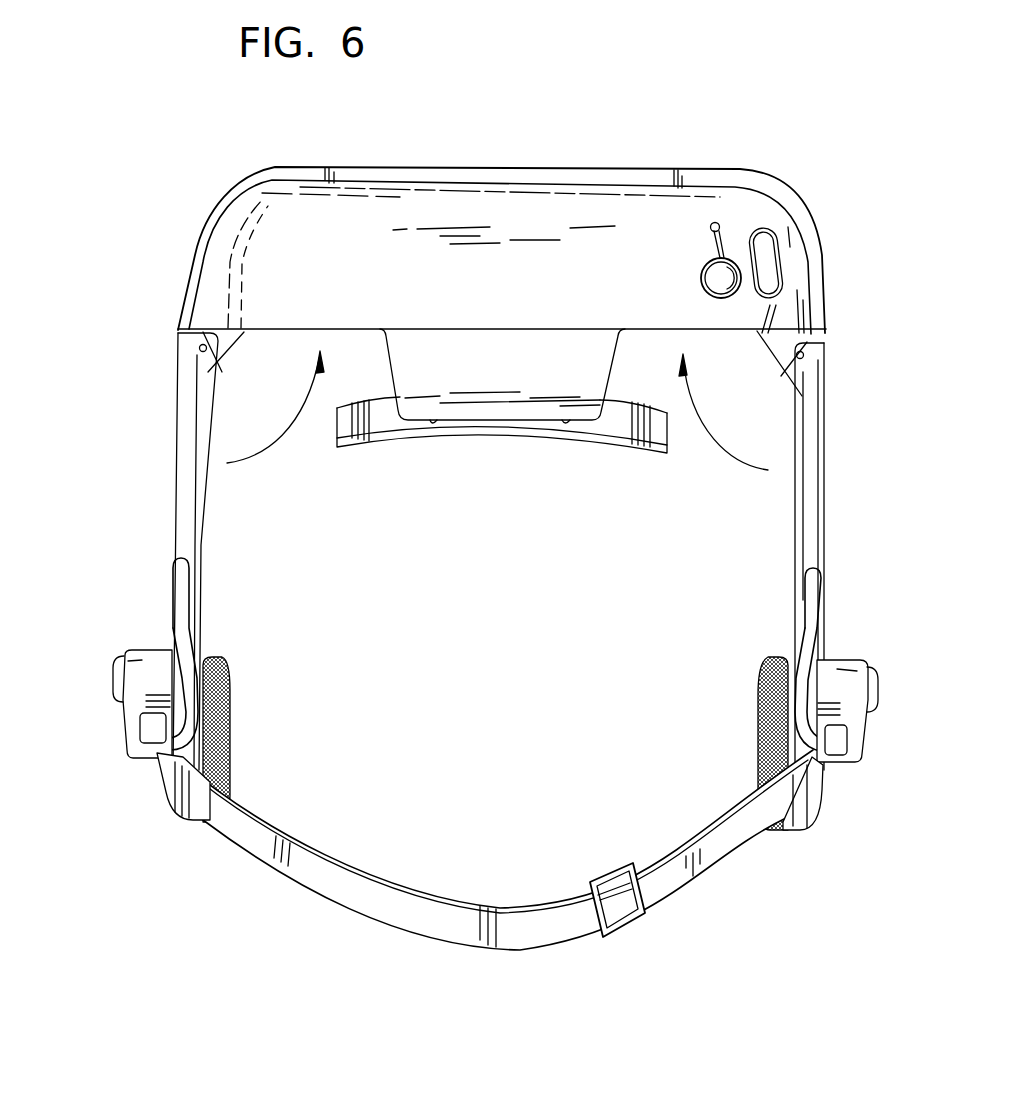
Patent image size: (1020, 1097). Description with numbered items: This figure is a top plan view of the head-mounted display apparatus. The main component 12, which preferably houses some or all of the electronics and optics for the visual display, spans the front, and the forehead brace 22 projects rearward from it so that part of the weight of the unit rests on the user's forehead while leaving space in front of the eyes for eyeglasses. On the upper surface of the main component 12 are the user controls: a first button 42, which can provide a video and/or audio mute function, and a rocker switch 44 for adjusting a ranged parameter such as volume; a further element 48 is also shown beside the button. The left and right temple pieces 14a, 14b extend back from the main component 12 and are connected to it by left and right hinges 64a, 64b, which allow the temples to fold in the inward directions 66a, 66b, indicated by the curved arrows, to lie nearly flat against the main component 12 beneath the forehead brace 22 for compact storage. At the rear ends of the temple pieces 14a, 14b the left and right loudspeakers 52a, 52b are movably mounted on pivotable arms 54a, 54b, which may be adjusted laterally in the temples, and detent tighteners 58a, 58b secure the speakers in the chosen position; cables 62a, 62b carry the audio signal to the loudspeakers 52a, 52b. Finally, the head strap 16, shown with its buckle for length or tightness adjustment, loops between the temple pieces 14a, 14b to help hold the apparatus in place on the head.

The main component 12 is at (198, 175).
The left temple piece 14a is at (820, 421).
The right temple piece 14b is at (185, 413).
The strap 16 is at (720, 843).
The forehead brace 22 is at (585, 398).
The first button 42 is at (701, 283).
The rocker switch 44 is at (767, 263).
The pin 48 is at (711, 229).
The left loudspeaker 52a is at (762, 688).
The right loudspeaker 52b is at (228, 686).
The pivotable arm 54a is at (838, 668).
The pivotable arm 54b is at (143, 660).
The detent tightener 58a is at (868, 685).
The detent tightener 58b is at (115, 673).
The cable 62a is at (810, 612).
The cable 62b is at (180, 608).
The left hinge 64a is at (798, 358).
The right hinge 64b is at (206, 349).
The inward folding direction 66a is at (738, 456).
The inward folding direction 66b is at (268, 447).